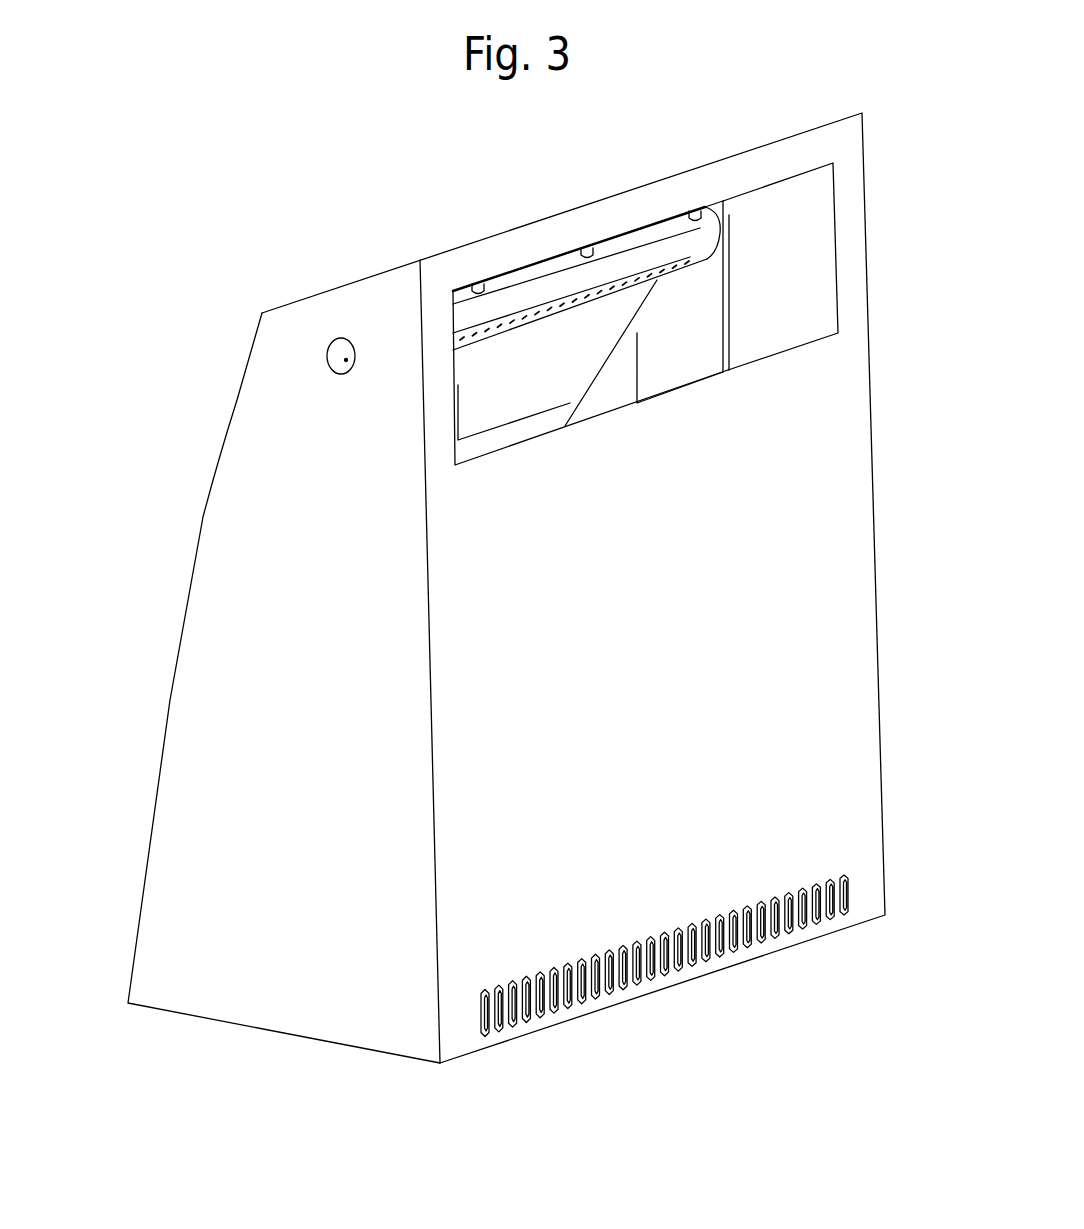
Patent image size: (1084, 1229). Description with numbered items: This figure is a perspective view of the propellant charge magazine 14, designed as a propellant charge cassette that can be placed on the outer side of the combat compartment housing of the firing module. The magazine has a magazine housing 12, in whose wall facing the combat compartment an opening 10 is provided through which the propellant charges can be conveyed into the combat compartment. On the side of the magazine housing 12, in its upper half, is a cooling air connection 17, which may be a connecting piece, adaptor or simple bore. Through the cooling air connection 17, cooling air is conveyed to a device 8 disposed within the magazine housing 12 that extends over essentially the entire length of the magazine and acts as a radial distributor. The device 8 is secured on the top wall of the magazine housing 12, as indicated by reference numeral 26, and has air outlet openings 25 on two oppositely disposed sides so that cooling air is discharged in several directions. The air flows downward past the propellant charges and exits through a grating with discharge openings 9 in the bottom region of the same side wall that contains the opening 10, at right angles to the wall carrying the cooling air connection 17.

The propellant charge magazine 14 is at (293, 139).
The magazine housing 12 is at (277, 445).
The cooling air connection 17 is at (333, 350).
The opening 10 is at (795, 215).
The device for delivery and distribution of cooling air 8 is at (573, 285).
The securing of the device on the top wall 26 is at (477, 286).
The air outlet openings 25 is at (670, 265).
The discharge openings 9 is at (693, 965).